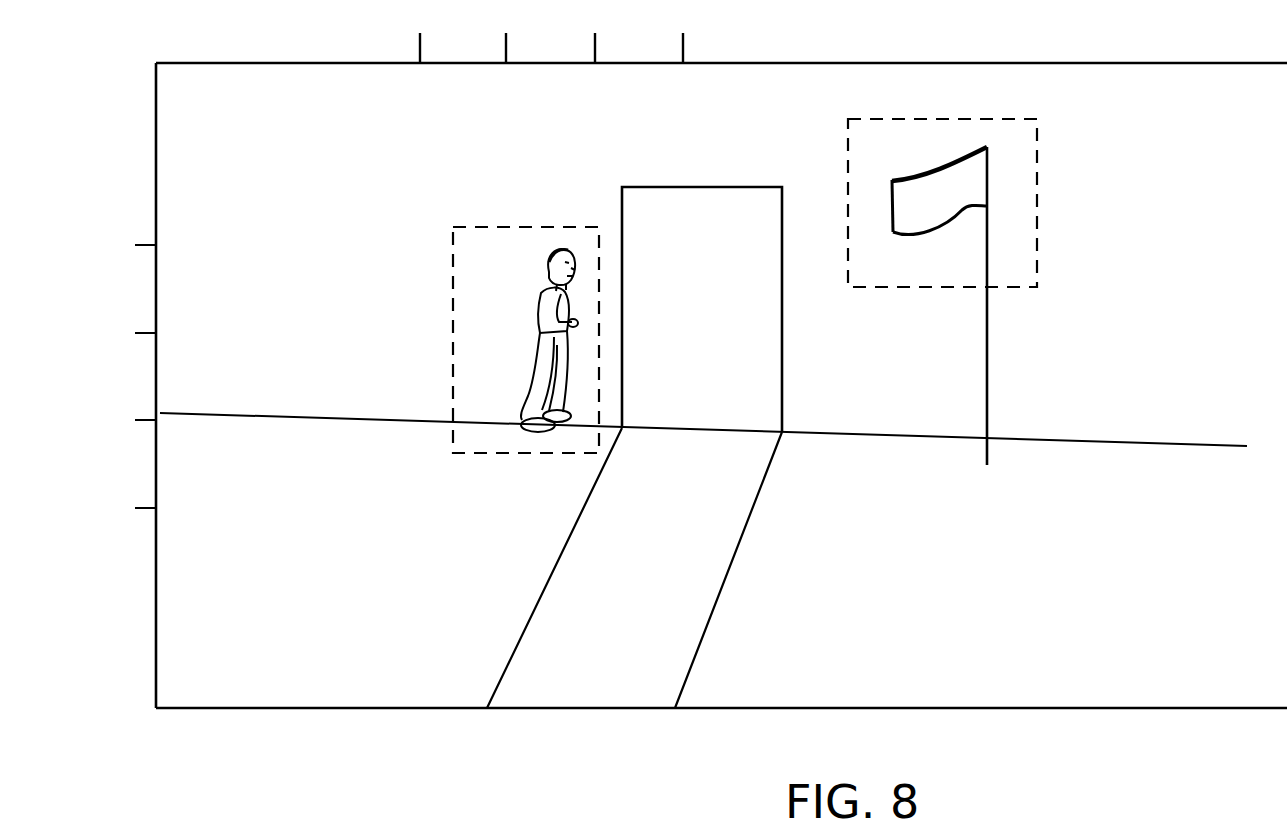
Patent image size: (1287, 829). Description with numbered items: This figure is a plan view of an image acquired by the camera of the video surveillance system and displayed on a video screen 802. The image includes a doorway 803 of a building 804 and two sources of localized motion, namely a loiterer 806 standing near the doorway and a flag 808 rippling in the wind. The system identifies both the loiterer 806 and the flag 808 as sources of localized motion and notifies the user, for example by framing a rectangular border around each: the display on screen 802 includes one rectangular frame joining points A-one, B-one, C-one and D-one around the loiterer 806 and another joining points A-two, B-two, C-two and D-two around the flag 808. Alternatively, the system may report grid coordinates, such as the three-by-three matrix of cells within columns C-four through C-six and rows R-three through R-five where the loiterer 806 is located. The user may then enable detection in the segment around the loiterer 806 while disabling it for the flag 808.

The video screen 802 is at (336, 710).
The doorway 803 is at (700, 222).
The building 804 is at (283, 117).
The loiterer 806 is at (535, 171).
The flag 808 is at (1116, 188).